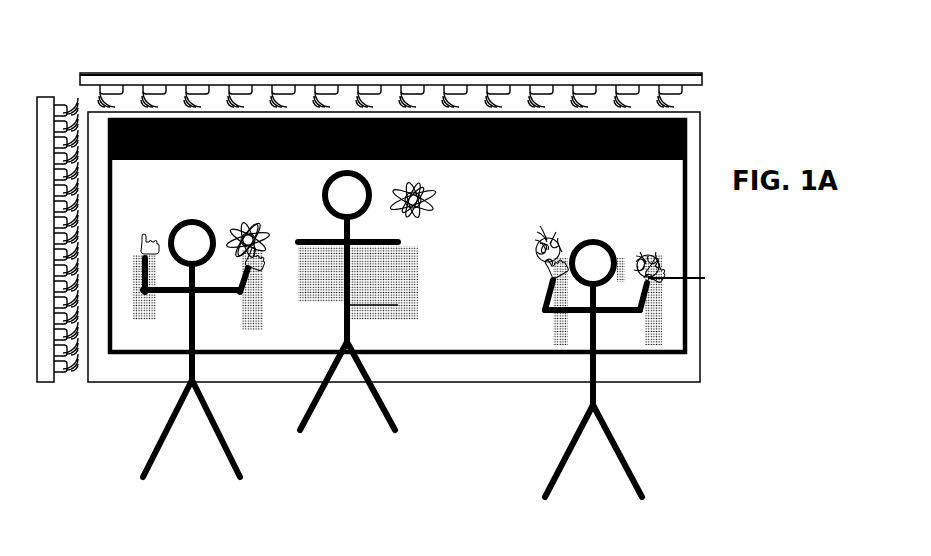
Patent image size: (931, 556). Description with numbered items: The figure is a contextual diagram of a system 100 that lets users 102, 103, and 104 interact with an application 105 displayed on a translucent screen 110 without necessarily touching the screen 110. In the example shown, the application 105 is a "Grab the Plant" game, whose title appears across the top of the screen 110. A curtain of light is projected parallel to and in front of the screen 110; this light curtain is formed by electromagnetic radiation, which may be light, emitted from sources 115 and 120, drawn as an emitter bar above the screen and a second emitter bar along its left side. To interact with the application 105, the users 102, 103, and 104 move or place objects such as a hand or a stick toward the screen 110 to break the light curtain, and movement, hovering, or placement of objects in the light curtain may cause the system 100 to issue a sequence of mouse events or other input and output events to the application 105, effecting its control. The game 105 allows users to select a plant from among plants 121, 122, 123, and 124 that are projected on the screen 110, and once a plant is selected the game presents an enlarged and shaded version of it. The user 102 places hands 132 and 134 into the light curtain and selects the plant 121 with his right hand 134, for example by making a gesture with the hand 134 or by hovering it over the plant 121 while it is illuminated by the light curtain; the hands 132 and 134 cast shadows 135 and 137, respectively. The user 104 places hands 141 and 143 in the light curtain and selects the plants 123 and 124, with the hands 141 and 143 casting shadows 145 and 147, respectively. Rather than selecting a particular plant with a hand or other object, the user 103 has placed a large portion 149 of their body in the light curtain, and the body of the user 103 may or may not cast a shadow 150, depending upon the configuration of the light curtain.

The system 100 is at (444, 41).
The user 102 is at (195, 364).
The user 103 is at (348, 317).
The user 104 is at (596, 384).
The application 105 is at (700, 298).
The translucent screen 110 is at (705, 378).
The source 115 is at (718, 84).
The source 120 is at (65, 386).
The plant 121 is at (250, 228).
The plant 122 is at (446, 205).
The plant 123 is at (548, 236).
The plant 124 is at (652, 252).
The hand 132 is at (144, 240).
The right hand 134 is at (262, 272).
The shadow 135 is at (143, 315).
The shadow 137 is at (249, 325).
The hand 141 is at (541, 276).
The hand 143 is at (705, 278).
The shadow 145 is at (560, 333).
The shadow 147 is at (652, 320).
The large portion of body 149 is at (398, 305).
The shadow 150 is at (358, 283).